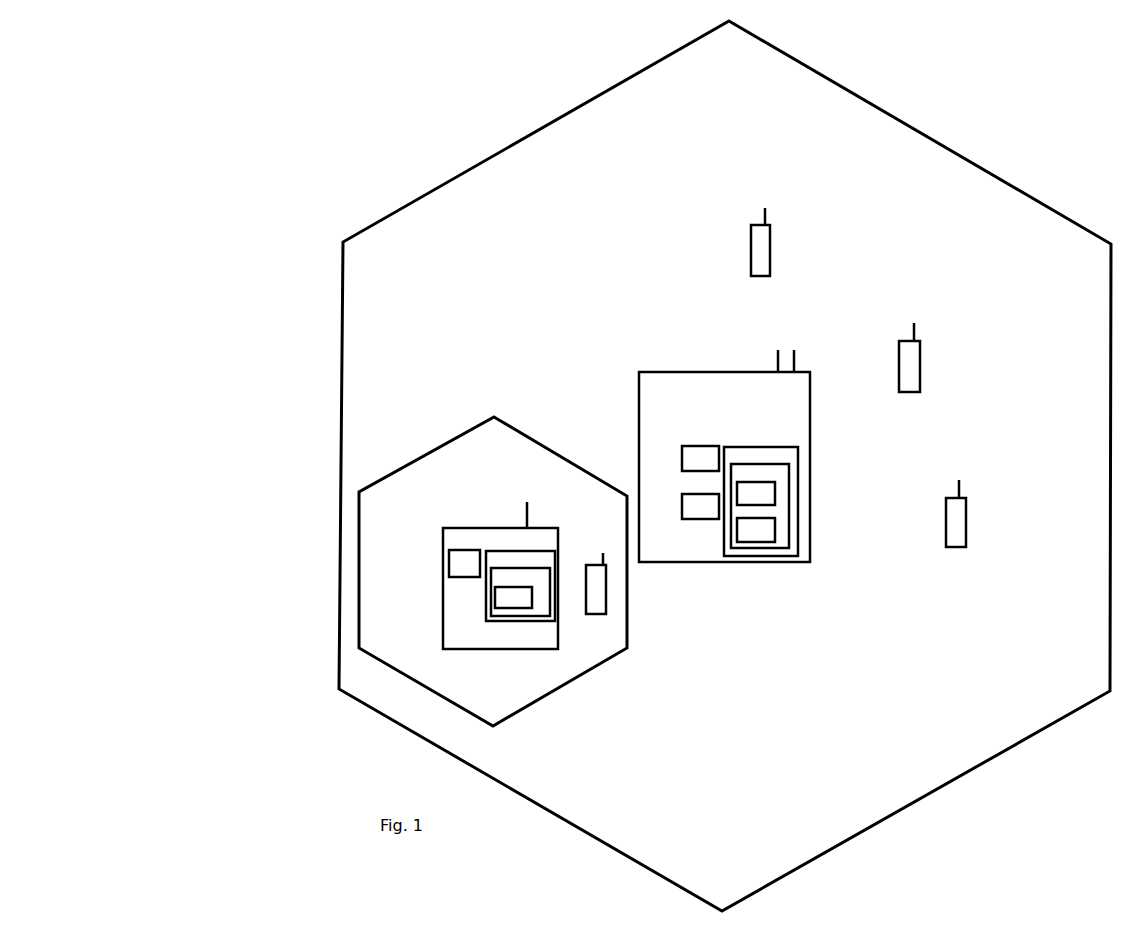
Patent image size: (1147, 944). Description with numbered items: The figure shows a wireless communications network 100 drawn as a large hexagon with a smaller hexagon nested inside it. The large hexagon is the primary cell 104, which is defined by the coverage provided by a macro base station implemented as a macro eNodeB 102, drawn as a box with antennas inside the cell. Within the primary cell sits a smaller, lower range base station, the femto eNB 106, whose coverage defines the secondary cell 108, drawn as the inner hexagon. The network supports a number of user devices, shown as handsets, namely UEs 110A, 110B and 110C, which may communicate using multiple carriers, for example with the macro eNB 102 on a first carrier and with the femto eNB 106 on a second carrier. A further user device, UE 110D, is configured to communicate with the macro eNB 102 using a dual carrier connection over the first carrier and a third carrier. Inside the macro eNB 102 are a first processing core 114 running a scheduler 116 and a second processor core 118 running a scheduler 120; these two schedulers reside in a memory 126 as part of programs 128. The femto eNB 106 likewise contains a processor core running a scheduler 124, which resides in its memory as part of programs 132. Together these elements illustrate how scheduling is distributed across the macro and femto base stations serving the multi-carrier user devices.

The network 100 is at (210, 138).
The macro eNodeB 102 is at (685, 371).
The primary cell 104 is at (470, 166).
The femto eNB 106 is at (480, 526).
The secondary cell 108 is at (474, 429).
The UE 110A is at (586, 590).
The UE 110B is at (751, 246).
The UE 110C is at (966, 523).
The UE 110D is at (920, 367).
The first processing core 114 is at (711, 443).
The scheduler 116 is at (766, 481).
The second processor core 118 is at (711, 491).
The scheduler 120 is at (766, 518).
The scheduler 124 is at (520, 550).
The memory 126 is at (754, 443).
The programs 128 is at (787, 465).
The programs 132 is at (547, 568).